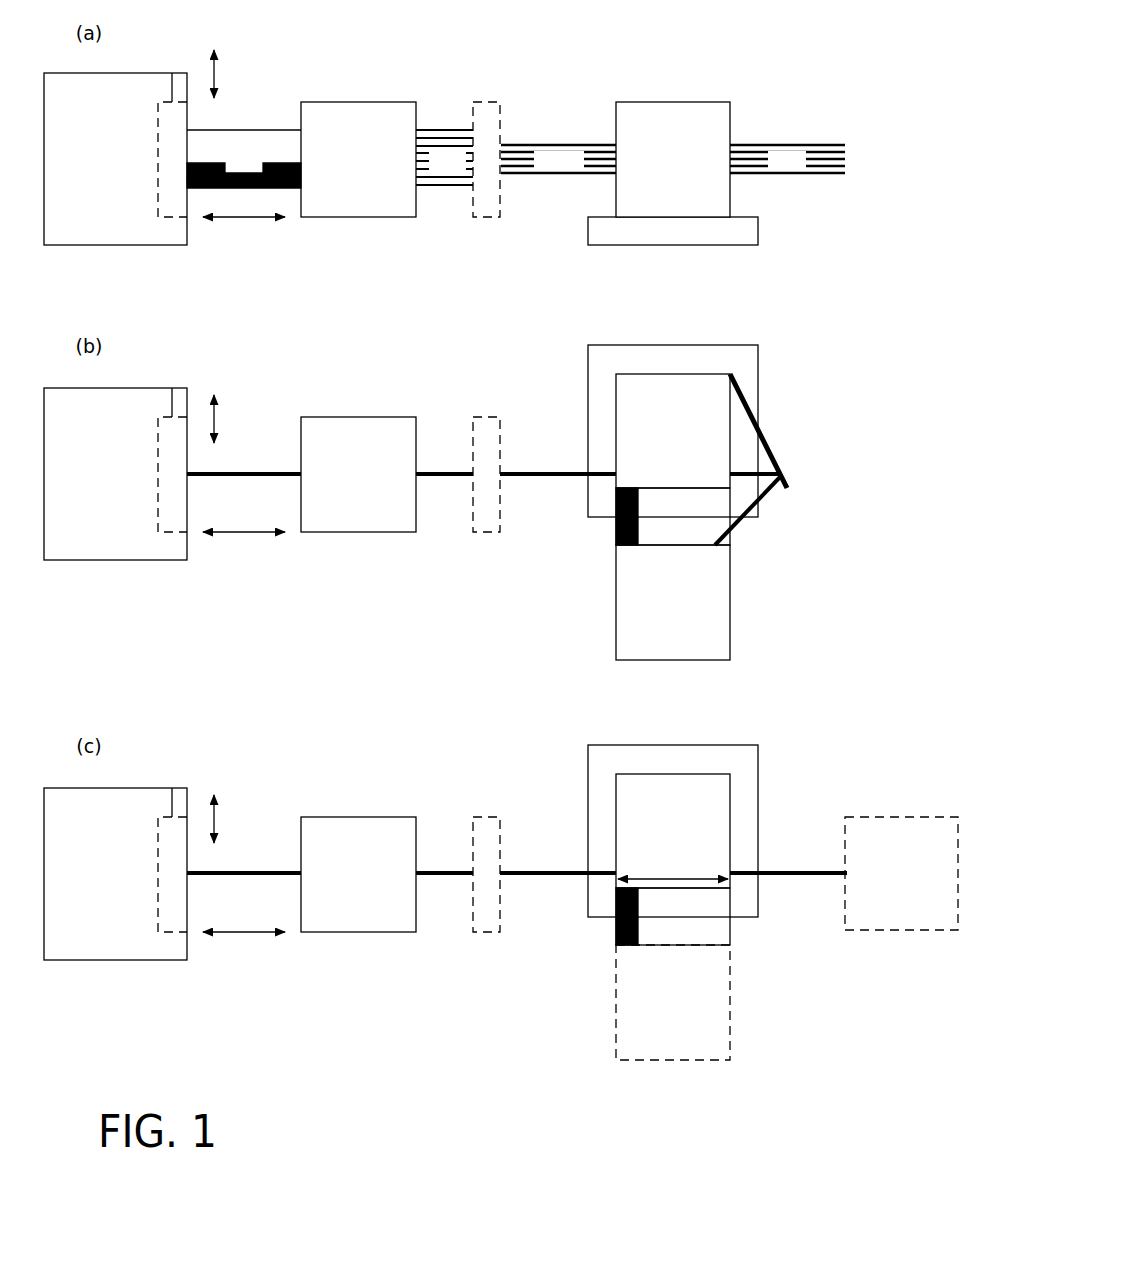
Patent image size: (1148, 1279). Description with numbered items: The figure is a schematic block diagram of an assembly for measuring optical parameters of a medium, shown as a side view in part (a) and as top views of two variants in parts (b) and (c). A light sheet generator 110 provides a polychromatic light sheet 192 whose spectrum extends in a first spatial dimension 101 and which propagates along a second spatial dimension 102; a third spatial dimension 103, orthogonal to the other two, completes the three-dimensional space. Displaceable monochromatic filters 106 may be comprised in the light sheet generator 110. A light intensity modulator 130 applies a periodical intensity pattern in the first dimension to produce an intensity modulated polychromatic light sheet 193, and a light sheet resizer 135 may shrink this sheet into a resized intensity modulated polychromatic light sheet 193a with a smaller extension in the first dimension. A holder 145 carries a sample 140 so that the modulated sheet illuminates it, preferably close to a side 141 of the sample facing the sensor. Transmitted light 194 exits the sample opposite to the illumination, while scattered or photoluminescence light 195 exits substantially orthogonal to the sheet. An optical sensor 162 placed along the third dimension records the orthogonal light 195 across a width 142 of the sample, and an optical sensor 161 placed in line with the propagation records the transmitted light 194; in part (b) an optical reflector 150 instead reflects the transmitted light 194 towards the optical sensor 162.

The first spatial dimension 101 is at (238, 74).
The second spatial dimension 102 is at (244, 587).
The third spatial dimension 103 is at (238, 619).
The displaceable monochromatic filters 106 is at (174, 100).
The light sheet generator 110 is at (115, 516).
The light intensity modulator 130 is at (358, 517).
The light sheet resizer 135 is at (488, 102).
The sample 140 is at (673, 495).
The side of the sample 141 is at (705, 892).
The width of the sample 142 is at (673, 870).
The holder 145 is at (673, 567).
The optical reflector 150 is at (777, 452).
The optical sensor 161 is at (901, 873).
The optical sensor 162 is at (673, 802).
The polychromatic light sheet 192 is at (244, 515).
The intensity modulated polychromatic light sheet 193 is at (444, 514).
The resized intensity modulated polychromatic light sheet 193a is at (558, 522).
The transmitted light 194 is at (793, 558).
The scattered or photoluminescence light 195 is at (638, 517).